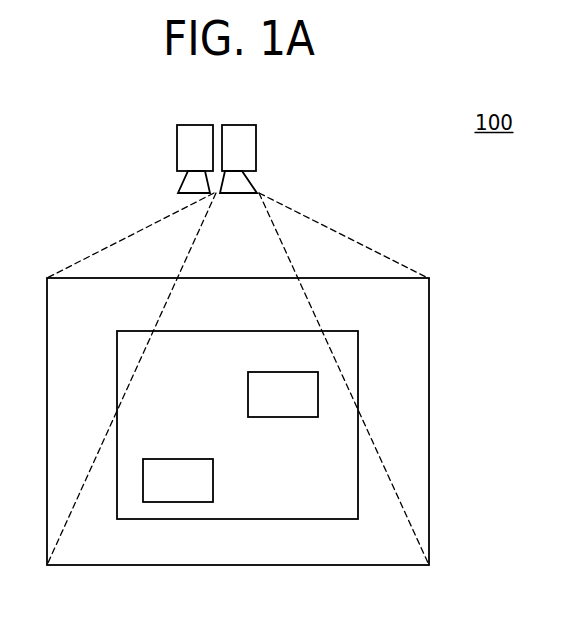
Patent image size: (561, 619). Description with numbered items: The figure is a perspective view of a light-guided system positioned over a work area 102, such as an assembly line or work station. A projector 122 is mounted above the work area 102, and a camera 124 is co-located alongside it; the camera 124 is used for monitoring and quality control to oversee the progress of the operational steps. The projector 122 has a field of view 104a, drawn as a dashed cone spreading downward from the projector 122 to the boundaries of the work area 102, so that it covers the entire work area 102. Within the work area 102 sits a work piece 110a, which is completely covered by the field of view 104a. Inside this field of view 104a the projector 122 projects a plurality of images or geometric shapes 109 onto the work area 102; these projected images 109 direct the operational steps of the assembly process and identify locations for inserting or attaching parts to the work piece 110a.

The work area 102 is at (335, 566).
The field of view 104a is at (320, 226).
The projected images 109 is at (258, 372).
The work piece 110a is at (188, 331).
The projector 122 is at (245, 125).
The camera 124 is at (190, 125).